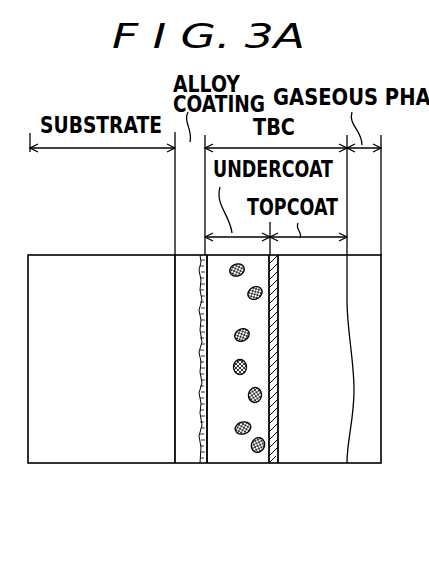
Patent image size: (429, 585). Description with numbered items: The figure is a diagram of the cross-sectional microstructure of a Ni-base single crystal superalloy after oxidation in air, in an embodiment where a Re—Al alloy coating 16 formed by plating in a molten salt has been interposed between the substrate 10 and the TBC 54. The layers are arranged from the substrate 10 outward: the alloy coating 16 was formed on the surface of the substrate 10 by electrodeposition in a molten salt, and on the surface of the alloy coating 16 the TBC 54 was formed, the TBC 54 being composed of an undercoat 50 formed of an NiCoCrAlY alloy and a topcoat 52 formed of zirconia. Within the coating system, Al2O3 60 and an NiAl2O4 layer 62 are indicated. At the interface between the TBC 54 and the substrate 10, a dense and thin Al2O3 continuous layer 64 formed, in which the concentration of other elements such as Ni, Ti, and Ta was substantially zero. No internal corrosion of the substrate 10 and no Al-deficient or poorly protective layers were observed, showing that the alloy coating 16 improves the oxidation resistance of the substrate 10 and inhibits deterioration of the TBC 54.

The substrate 10 is at (107, 456).
The alloy coating 16 is at (188, 456).
The undercoat 50 is at (270, 389).
The topcoat 52 is at (313, 456).
The TBC 54 is at (280, 410).
The Al2O3 60 is at (255, 325).
The NiAl2O4 layer 62 is at (273, 388).
The Al2O3 continuous layer 64 is at (200, 347).